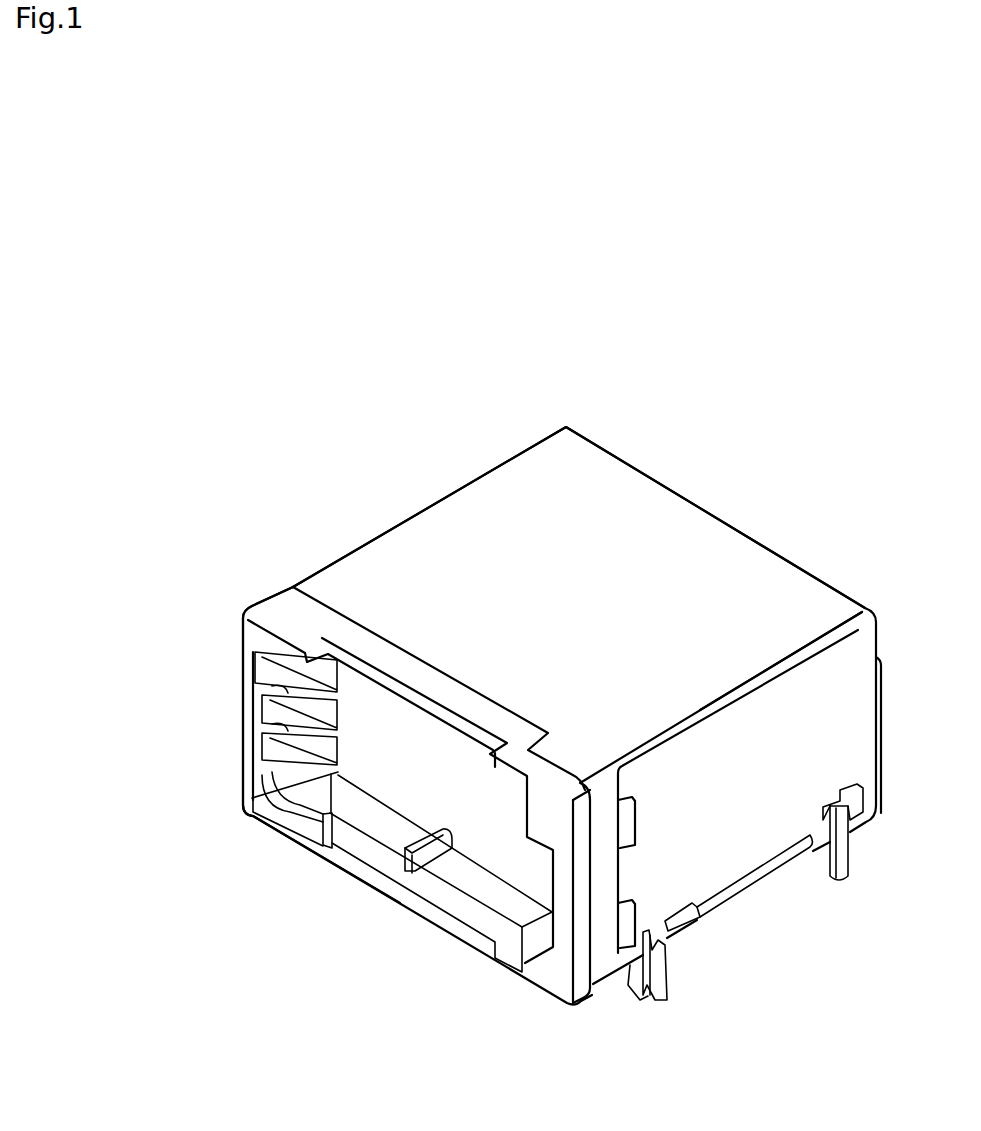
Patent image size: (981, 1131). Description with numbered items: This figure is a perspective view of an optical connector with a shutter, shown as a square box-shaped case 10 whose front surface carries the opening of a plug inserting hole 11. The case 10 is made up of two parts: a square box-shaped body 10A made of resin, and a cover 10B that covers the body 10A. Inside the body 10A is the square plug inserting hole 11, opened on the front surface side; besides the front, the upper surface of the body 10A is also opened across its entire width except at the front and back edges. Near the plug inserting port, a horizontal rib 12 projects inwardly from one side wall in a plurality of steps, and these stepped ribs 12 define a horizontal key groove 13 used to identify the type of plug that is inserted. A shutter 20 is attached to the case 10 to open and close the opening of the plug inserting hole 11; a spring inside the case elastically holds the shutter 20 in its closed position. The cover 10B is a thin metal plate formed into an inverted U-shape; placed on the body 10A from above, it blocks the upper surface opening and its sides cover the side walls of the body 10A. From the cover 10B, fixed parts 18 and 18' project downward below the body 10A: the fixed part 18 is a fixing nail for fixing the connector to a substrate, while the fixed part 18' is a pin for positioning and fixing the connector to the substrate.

The case 10 is at (424, 485).
The body 10A is at (280, 597).
The cover 10B is at (500, 490).
The plug inserting hole 11 is at (370, 803).
The horizontal rib 12 is at (265, 702).
The horizontal key groove 13 is at (275, 722).
The fixed part 18 is at (636, 1010).
The fixed part 18' is at (830, 875).
The shutter 20 is at (497, 838).